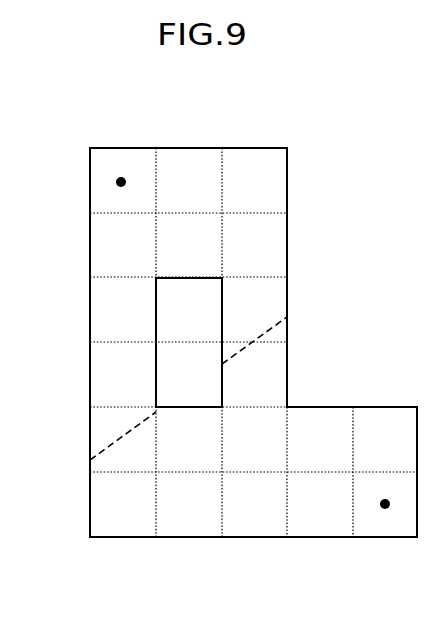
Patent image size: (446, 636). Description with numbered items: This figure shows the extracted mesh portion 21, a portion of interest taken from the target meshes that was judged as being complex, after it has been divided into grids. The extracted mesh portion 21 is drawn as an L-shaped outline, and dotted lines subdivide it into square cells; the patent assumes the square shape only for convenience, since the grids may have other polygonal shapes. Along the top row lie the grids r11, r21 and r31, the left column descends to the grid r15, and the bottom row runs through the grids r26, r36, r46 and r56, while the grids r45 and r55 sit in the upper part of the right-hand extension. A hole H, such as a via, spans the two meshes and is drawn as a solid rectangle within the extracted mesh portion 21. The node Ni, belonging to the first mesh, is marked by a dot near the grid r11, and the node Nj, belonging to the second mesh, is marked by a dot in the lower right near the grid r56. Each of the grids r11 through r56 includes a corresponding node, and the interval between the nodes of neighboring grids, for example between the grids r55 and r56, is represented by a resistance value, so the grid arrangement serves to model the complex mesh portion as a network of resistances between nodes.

The extracted mesh portion 21 is at (296, 279).
The hole H is at (176, 278).
The node Ni is at (133, 193).
The node Nj is at (392, 492).
The grid r11 is at (97, 183).
The grid r21 is at (200, 165).
The grid r31 is at (274, 192).
The grid r15 is at (98, 507).
The grid r26 is at (195, 525).
The grid r36 is at (260, 525).
The grid r45 is at (305, 422).
The grid r55 is at (367, 422).
The grid r46 is at (330, 523).
The grid r56 is at (405, 523).